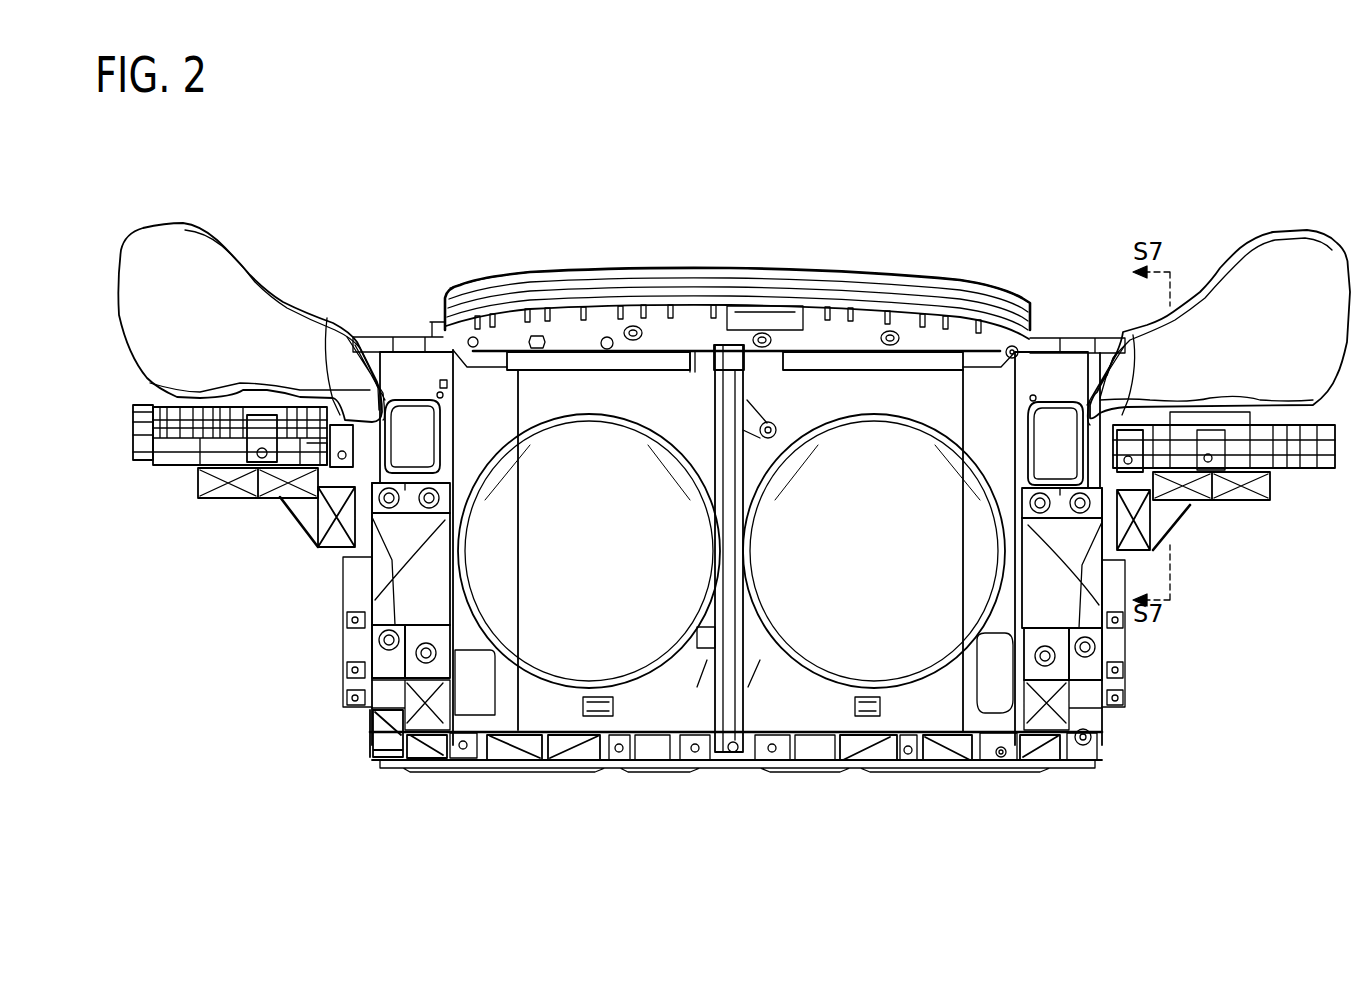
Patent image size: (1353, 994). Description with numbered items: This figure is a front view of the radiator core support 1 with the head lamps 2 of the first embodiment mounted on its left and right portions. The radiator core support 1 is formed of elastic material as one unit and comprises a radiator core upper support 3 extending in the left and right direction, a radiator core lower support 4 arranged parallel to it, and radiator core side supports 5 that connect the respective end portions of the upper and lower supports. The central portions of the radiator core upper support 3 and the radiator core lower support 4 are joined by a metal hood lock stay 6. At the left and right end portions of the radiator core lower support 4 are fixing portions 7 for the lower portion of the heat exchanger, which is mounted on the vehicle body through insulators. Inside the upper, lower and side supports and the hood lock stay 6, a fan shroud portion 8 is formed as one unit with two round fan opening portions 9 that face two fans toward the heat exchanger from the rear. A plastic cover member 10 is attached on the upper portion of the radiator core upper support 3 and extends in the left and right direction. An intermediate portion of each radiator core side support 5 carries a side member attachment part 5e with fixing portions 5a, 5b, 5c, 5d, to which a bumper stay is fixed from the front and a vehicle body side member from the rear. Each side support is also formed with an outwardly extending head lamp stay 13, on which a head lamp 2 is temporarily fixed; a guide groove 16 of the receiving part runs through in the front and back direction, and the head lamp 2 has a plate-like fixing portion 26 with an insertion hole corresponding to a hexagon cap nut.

The radiator core support 1 is at (732, 258).
The head lamp 2 is at (221, 226).
The radiator core upper support 3 is at (940, 362).
The radiator core lower support 4 is at (882, 755).
The radiator core side support 5 is at (345, 577).
The fixing portion 5a is at (318, 547).
The fixing portion 5b is at (427, 517).
The fixing portion 5c is at (382, 648).
The fixing portion 5d is at (414, 655).
The side member attachment part 5e is at (423, 583).
The hood lock stay 6 is at (748, 556).
The fixing portion 7 is at (500, 718).
The fan shroud portion 8 is at (655, 703).
The fan opening portion 9 is at (540, 672).
The cover member 10 is at (863, 278).
The head lamp stay 13 is at (205, 492).
The guide groove 16 is at (178, 462).
The fixing portion 26 is at (343, 422).